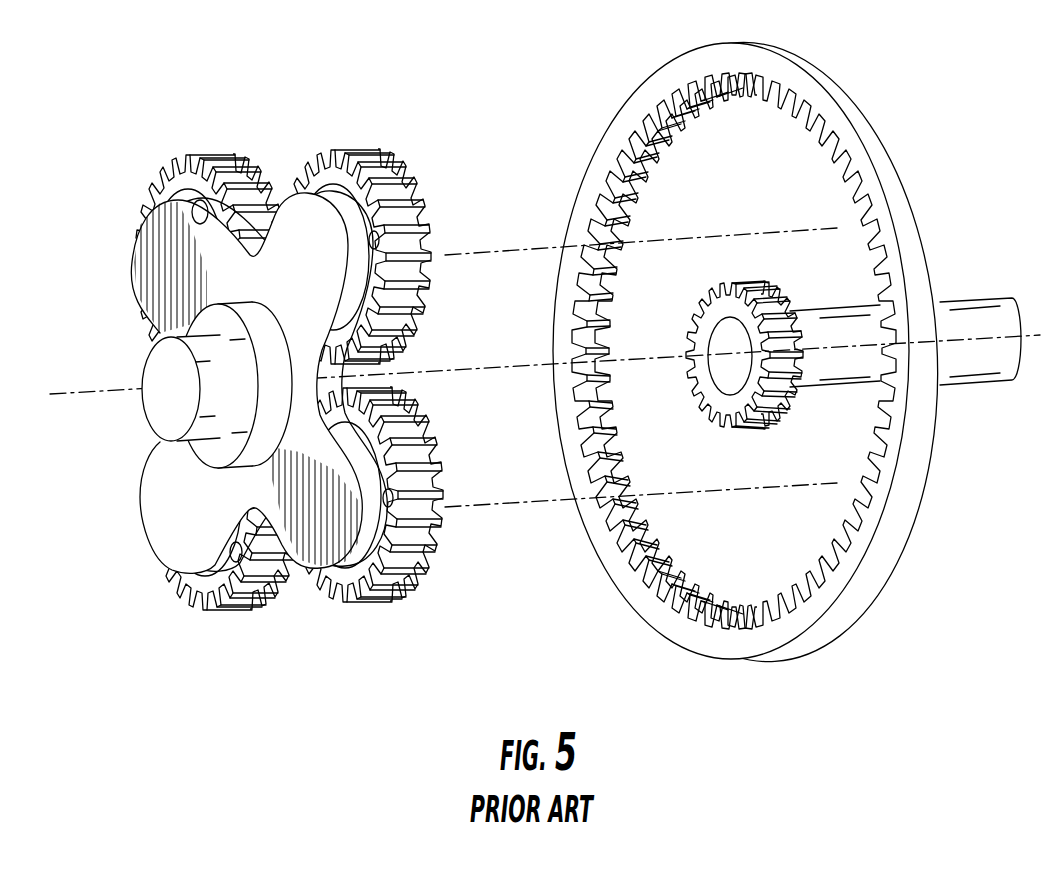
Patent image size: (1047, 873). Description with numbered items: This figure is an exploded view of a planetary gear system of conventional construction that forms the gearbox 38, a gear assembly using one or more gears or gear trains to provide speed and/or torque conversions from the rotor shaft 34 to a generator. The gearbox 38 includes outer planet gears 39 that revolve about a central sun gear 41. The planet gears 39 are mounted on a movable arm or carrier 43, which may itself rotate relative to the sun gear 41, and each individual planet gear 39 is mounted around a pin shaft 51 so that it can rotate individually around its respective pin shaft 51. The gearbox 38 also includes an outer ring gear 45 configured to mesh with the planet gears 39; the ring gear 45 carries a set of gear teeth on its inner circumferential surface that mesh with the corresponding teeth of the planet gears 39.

The rotor shaft 34 is at (133, 372).
The gearbox 38 is at (278, 346).
The planet gear 39 is at (203, 153).
The sun gear 41 is at (708, 388).
The carrier 43 is at (125, 275).
The ring gear 45 is at (618, 128).
The pin shaft 51 is at (206, 204).